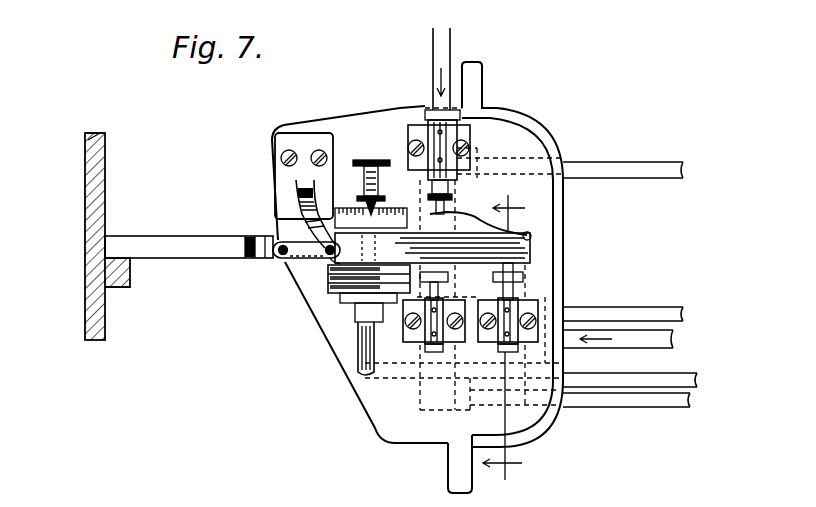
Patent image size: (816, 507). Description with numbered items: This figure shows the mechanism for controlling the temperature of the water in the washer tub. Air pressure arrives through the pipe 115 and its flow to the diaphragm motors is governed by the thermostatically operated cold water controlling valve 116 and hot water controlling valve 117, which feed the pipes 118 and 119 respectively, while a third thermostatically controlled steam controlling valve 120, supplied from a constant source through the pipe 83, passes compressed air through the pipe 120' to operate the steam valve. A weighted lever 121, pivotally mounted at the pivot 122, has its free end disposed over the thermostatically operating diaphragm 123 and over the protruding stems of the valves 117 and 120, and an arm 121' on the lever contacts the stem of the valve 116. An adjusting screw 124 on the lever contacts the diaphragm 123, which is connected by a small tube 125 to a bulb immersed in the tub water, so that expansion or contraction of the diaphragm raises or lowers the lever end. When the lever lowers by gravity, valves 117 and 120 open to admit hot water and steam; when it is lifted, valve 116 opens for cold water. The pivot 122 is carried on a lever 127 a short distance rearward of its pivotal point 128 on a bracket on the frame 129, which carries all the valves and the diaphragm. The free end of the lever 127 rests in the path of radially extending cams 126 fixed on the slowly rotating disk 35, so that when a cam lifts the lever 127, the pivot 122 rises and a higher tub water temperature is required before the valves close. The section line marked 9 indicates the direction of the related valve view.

The slowly rotating disk 35 is at (85, 156).
The radially extending cams 126 is at (130, 290).
The lever 127 is at (157, 240).
The pivot 122 is at (280, 260).
The pivotal point 128 is at (330, 264).
The frame 129 is at (275, 160).
The adjusting screw 124 is at (374, 165).
The weighted lever 121 is at (466, 248).
The arm 121' is at (480, 213).
The section line 9 is at (504, 345).
The cold water controlling valve 116 is at (432, 135).
The pipe 115 is at (433, 40).
The pipe 118 is at (614, 178).
The pipe 120' is at (623, 299).
The pipe 83 is at (636, 348).
The small tube 125 is at (694, 380).
The pipe 119 is at (668, 407).
The thermostatically operating diaphragm 123 is at (345, 298).
The hot water controlling valve 117 is at (420, 344).
The steam controlling valve 120 is at (497, 307).